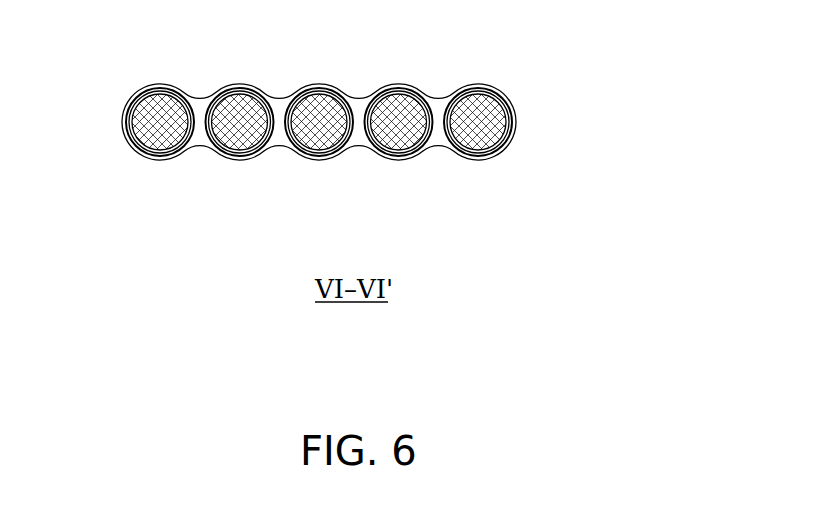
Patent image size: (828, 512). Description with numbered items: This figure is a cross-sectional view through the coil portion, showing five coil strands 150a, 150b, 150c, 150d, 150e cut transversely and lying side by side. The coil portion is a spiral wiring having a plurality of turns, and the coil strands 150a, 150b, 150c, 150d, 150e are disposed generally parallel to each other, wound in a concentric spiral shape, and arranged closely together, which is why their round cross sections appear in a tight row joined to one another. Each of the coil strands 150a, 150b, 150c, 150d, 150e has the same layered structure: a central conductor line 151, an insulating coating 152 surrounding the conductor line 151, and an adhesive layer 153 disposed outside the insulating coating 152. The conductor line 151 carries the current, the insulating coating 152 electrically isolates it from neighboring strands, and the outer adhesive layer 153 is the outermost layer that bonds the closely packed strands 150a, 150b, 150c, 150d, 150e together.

The coil strand 150a is at (158, 167).
The coil strand 150b is at (242, 167).
The coil strand 150c is at (322, 167).
The coil strand 150d is at (403, 167).
The coil strand 150e is at (485, 167).
The conductor line 151 is at (510, 98).
The insulating coating 152 is at (480, 89).
The adhesive layer 153 is at (451, 90).